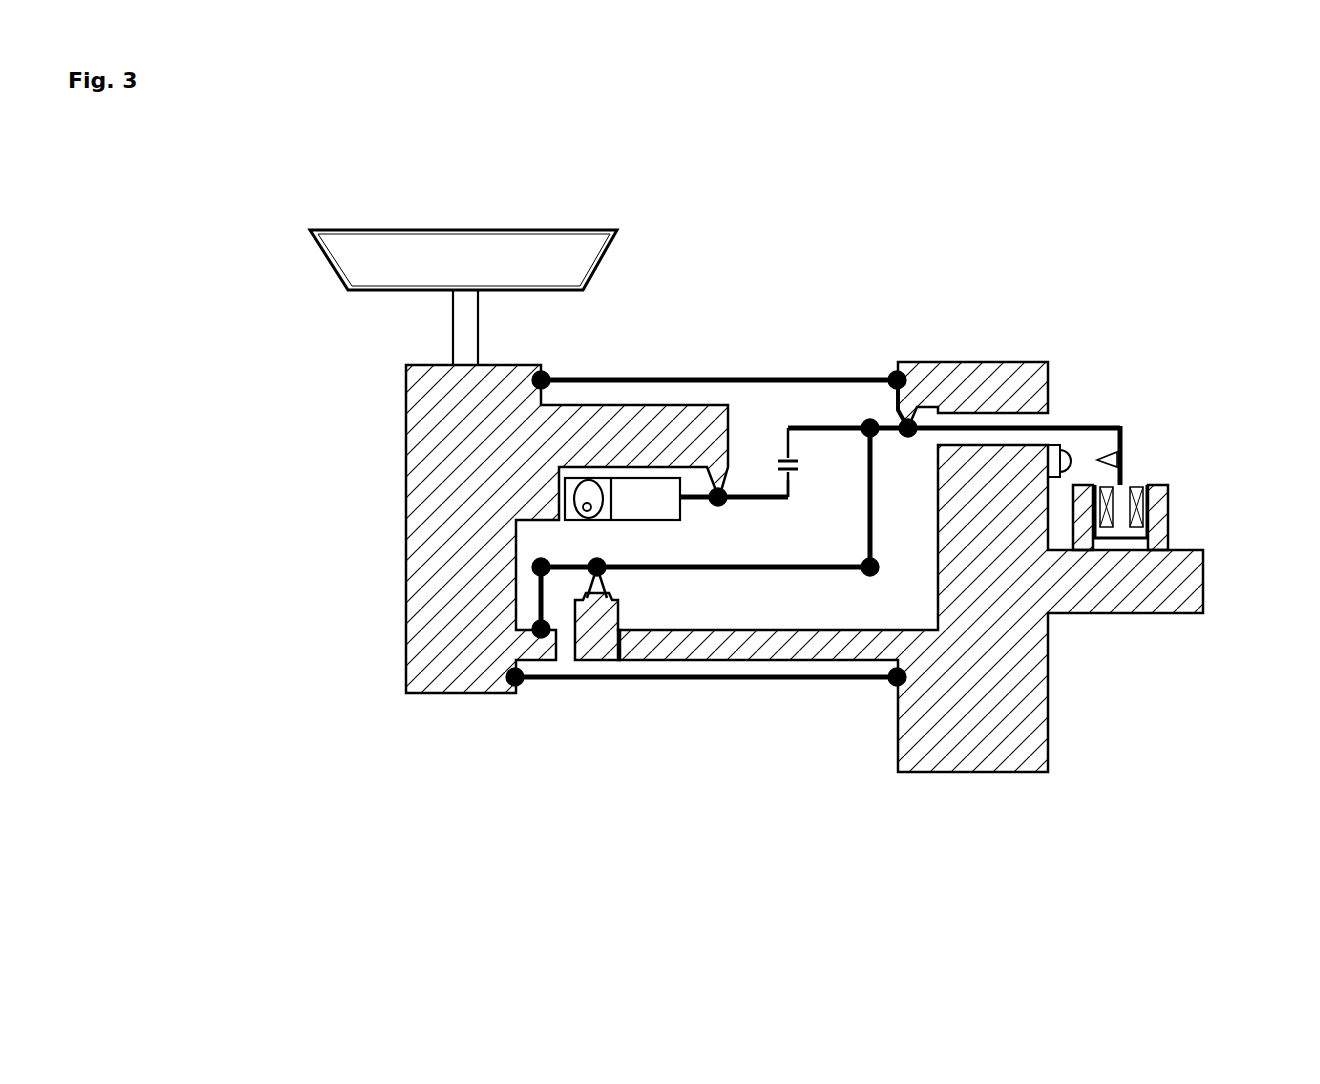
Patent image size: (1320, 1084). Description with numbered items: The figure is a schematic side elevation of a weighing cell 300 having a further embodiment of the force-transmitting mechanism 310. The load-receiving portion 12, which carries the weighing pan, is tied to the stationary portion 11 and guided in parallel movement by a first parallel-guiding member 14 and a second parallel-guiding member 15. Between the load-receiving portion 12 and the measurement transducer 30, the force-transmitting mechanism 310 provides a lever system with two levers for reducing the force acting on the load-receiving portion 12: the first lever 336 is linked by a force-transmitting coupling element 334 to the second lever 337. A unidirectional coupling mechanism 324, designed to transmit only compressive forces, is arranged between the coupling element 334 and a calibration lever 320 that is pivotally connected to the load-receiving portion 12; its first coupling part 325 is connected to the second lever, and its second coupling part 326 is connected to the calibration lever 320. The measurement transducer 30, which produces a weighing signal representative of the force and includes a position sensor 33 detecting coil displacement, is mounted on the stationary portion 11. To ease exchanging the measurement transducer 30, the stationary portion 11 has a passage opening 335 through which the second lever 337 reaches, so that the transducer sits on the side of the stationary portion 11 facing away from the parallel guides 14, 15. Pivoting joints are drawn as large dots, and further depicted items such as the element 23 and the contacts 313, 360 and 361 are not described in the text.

The stationary portion 11 is at (910, 608).
The load-receiving portion 12 is at (567, 529).
The first parallel-guiding member 14 is at (690, 380).
The second parallel-guiding member 15 is at (653, 682).
The load cell 23 is at (636, 493).
The measurement transducer 30 is at (1188, 516).
The position sensor 33 is at (1137, 450).
The weighing cell 300 is at (1043, 315).
The force-transmitting mechanism 310 is at (683, 588).
The contact 313 is at (503, 513).
The calibration lever 320 is at (750, 495).
The unidirectional coupling mechanism 324 is at (906, 324).
The first coupling part 325 is at (786, 426).
The second coupling part 326 is at (790, 497).
The force-transmitting coupling element 334 is at (877, 517).
The passage opening 335 is at (1040, 420).
The first lever 336 is at (737, 567).
The second lever 337 is at (1073, 426).
The contact pin 360 is at (597, 570).
The contact 361 is at (918, 410).